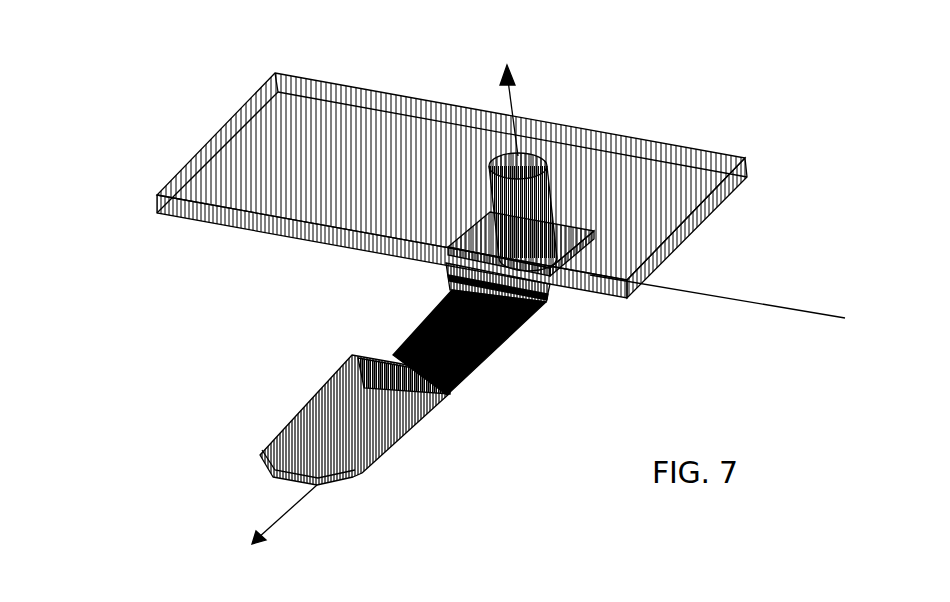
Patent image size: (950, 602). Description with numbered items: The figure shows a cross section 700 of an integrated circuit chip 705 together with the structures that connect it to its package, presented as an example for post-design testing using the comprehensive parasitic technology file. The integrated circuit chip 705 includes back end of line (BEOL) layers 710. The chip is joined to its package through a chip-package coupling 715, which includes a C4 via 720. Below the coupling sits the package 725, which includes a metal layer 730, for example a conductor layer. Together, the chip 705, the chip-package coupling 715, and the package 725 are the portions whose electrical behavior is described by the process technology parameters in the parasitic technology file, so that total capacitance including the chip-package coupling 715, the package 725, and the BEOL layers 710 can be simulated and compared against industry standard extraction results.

The cross section 700 is at (88, 80).
The integrated circuit chip 705 is at (292, 390).
The back end of line (BEOL) layers 710 is at (378, 420).
The chip-package coupling 715 is at (498, 233).
The C4 via 720 is at (538, 222).
The package 725 is at (268, 203).
The metal layer 730 is at (685, 183).